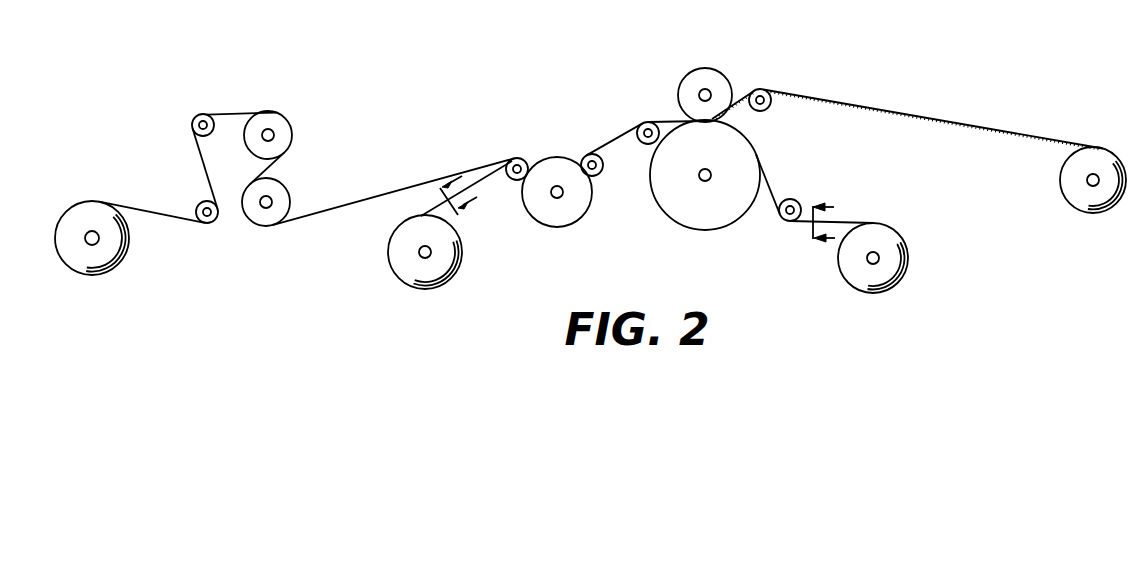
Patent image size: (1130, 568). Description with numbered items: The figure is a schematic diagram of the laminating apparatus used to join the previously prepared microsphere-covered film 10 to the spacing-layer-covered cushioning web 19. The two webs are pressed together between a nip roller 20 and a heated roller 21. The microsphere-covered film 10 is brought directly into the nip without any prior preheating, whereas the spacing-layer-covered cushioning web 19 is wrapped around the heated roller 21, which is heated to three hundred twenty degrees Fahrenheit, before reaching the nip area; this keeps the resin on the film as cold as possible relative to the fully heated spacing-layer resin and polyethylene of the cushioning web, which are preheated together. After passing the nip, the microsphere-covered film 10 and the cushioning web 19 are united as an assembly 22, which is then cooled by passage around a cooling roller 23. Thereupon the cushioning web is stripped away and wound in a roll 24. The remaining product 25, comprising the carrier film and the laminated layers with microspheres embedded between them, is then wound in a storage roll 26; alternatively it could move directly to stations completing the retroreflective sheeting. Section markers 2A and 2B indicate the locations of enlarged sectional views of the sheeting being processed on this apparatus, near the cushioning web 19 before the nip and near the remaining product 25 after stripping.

The microsphere-covered film 10 is at (918, 117).
The spacing-layer-covered cushioning web 19 is at (838, 222).
The nip roller 20 is at (715, 73).
The heated roller 21 is at (710, 222).
The assembly 22 is at (613, 135).
The cooling roller 23 is at (568, 213).
The roll 24 is at (448, 283).
The remaining product 25 is at (368, 197).
The storage roll 26 is at (117, 262).
The sectional view 2A is at (810, 225).
The sectional view 2B is at (469, 193).